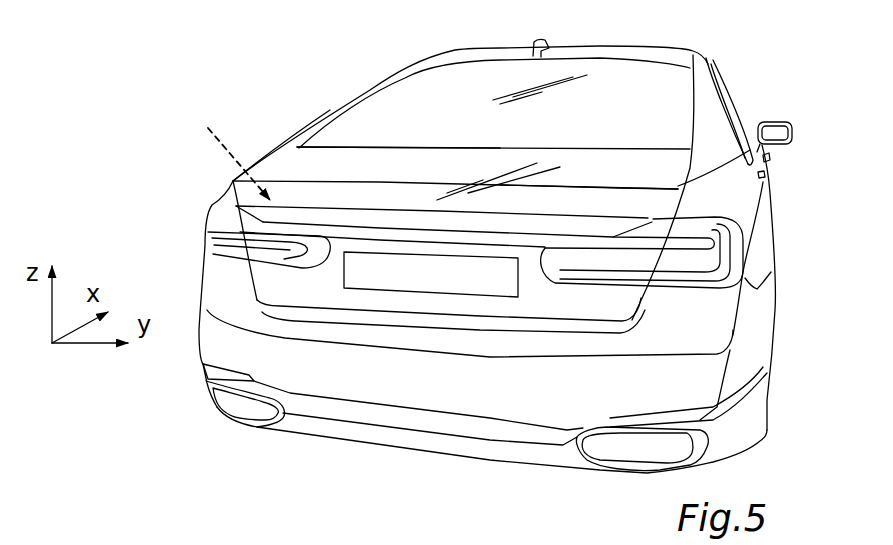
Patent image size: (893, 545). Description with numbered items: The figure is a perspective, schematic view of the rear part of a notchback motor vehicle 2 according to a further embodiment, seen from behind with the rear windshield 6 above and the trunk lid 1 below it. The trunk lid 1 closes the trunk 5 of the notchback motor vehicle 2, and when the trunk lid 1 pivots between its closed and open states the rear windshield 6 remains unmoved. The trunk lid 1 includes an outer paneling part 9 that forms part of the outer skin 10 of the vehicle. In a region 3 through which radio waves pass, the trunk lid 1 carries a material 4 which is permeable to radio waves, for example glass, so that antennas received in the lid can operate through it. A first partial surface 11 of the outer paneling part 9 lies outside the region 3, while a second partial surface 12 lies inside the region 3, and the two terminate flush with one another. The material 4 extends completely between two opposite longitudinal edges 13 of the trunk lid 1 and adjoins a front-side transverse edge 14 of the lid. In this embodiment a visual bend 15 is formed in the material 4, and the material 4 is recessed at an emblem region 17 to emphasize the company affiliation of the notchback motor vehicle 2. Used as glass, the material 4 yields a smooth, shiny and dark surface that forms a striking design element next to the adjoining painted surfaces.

The trunk lid 1 is at (272, 175).
The notchback motor vehicle 2 is at (703, 60).
The region through which radio waves pass 3 is at (658, 165).
The material which is permeable to radio waves 4 is at (298, 167).
The trunk 5 is at (230, 152).
The rear windshield 6 is at (670, 115).
The outer paneling part 9 is at (643, 218).
The outer skin 10 is at (762, 238).
The first partial surface 11 is at (348, 212).
The second partial surface 12 is at (498, 170).
The edges 13 is at (273, 150).
The front-side transverse edge 14 is at (454, 143).
The visual bend 15 is at (556, 178).
The emblem region 17 is at (425, 210).